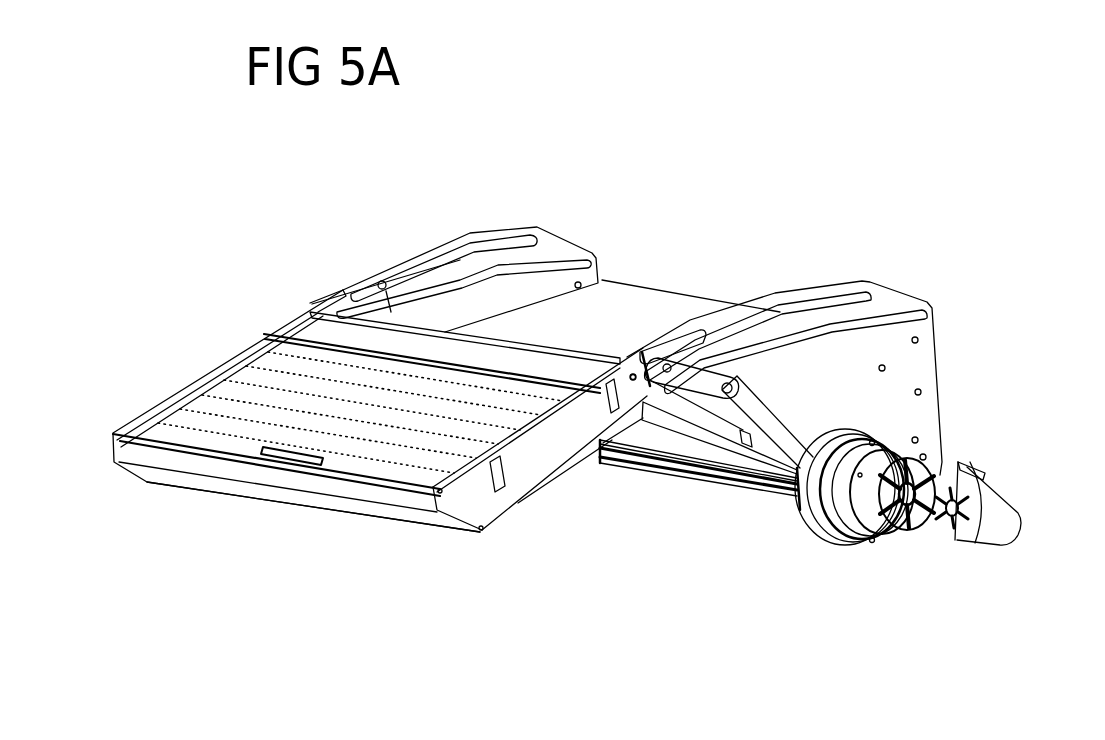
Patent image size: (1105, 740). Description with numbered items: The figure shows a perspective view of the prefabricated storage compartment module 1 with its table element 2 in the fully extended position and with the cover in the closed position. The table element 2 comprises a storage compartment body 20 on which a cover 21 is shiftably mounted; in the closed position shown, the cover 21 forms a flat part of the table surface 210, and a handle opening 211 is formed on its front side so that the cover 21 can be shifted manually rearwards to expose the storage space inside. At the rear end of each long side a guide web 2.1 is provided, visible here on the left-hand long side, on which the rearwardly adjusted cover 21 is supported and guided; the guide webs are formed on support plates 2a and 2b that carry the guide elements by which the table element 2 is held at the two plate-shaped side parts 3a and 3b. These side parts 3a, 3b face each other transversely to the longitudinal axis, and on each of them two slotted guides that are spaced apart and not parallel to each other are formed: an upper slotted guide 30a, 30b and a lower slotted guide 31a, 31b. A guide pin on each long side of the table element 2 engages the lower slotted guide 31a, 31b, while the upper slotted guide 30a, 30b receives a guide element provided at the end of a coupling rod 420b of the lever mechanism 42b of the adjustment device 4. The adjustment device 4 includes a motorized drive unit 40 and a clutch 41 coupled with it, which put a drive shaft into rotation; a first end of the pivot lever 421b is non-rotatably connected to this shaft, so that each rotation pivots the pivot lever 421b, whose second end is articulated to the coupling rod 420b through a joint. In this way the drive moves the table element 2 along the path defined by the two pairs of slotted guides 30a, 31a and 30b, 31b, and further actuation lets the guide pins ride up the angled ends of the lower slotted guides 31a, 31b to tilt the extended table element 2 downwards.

The storage compartment module 1 is at (790, 194).
The table element 2 is at (424, 404).
The support plate 2a is at (343, 288).
The support plate 2b is at (676, 337).
The guide web 2.1 is at (392, 305).
The storage compartment body 20 is at (483, 522).
The cover 21 is at (360, 428).
The table surface 210 is at (474, 409).
The handle opening 211 is at (322, 430).
The side part 3a is at (510, 239).
The side part 3b is at (849, 343).
The upper slotted guide 30a is at (487, 240).
The upper slotted guide 30b is at (872, 283).
The lower slotted guide 31a is at (596, 257).
The lower slotted guide 31b is at (930, 313).
The adjustment device 4 is at (897, 553).
The motorized drive unit 40 is at (984, 545).
The clutch 41 is at (832, 540).
The lever mechanism 42b is at (740, 448).
The coupling rod 420b is at (706, 372).
The pivot lever 421b is at (776, 416).